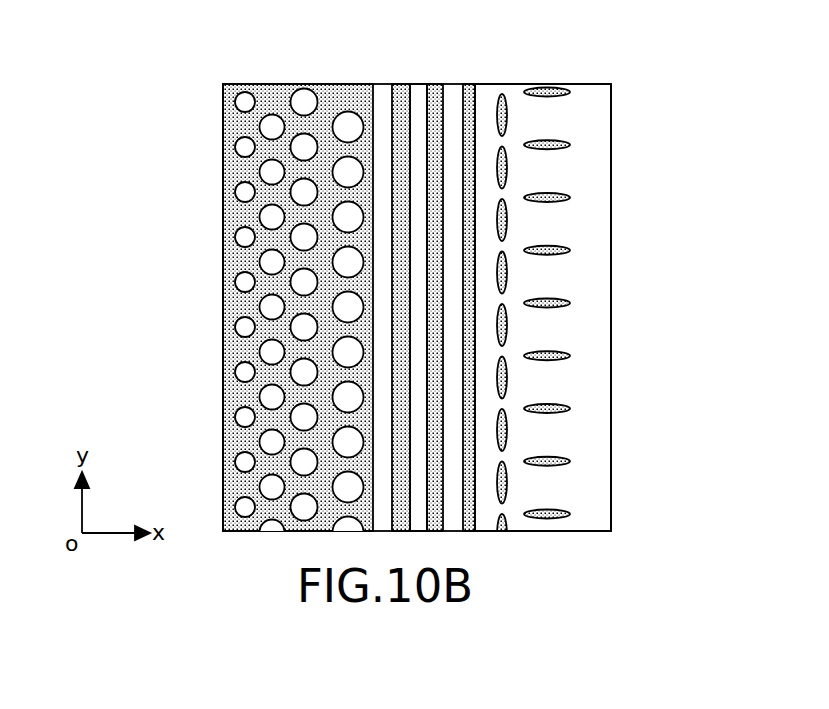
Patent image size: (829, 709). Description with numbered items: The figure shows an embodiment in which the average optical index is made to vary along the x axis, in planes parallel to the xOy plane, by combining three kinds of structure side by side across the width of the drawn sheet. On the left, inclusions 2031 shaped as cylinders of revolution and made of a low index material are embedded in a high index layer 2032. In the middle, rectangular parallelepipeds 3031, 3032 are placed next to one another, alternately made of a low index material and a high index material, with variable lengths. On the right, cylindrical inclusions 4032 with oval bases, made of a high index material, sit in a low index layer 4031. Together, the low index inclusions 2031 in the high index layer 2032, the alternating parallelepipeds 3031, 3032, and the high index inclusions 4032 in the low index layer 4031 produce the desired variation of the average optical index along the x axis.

The inclusions 2031 is at (272, 127).
The high index layer 2032 is at (275, 90).
The rectangular parallelepiped 3031 is at (418, 92).
The rectangular parallelepiped 3032 is at (433, 88).
The low index layer 4031 is at (600, 103).
The cylindrical inclusions 4032 is at (513, 93).